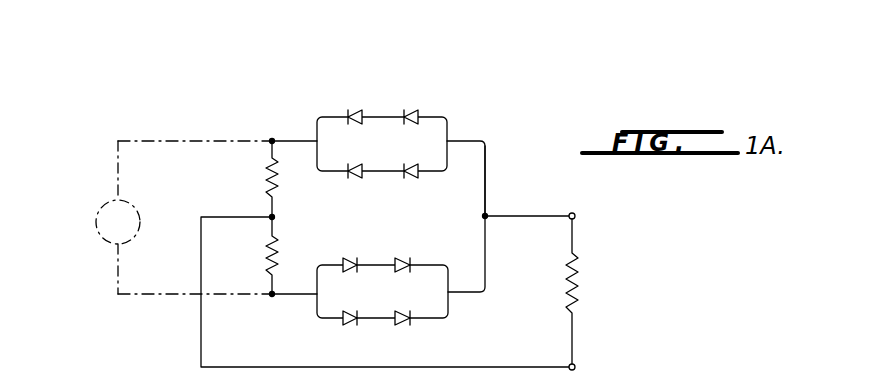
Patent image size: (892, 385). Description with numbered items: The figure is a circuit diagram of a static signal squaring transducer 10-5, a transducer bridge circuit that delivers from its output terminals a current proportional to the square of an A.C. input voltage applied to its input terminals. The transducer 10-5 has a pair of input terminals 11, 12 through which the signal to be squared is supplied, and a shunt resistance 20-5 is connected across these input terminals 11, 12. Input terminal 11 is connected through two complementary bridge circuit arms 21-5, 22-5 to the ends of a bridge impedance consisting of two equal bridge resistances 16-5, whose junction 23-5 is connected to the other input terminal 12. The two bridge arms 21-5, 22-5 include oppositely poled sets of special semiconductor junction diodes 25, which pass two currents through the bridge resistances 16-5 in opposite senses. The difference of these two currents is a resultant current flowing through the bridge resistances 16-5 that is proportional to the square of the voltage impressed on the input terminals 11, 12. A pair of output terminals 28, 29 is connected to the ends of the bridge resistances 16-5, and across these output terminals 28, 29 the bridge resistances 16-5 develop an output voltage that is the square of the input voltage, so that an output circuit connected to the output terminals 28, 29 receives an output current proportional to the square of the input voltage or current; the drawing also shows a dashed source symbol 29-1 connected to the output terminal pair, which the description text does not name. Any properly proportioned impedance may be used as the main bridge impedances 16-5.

The static signal squaring transducer 10-5 is at (388, 108).
The semiconductor junction diodes 25 is at (358, 126).
The output terminal 28 is at (282, 124).
The output terminal 29 is at (271, 300).
The alternating current source 29-1 is at (96, 227).
The bridge resistances 16-5 is at (267, 179).
The junction 23-5 is at (276, 217).
The bridge circuit arm 21-5 is at (488, 154).
The bridge circuit arm 22-5 is at (485, 229).
The input terminal 11 is at (576, 214).
The input terminal 12 is at (576, 368).
The shunt resistance 20-5 is at (579, 287).